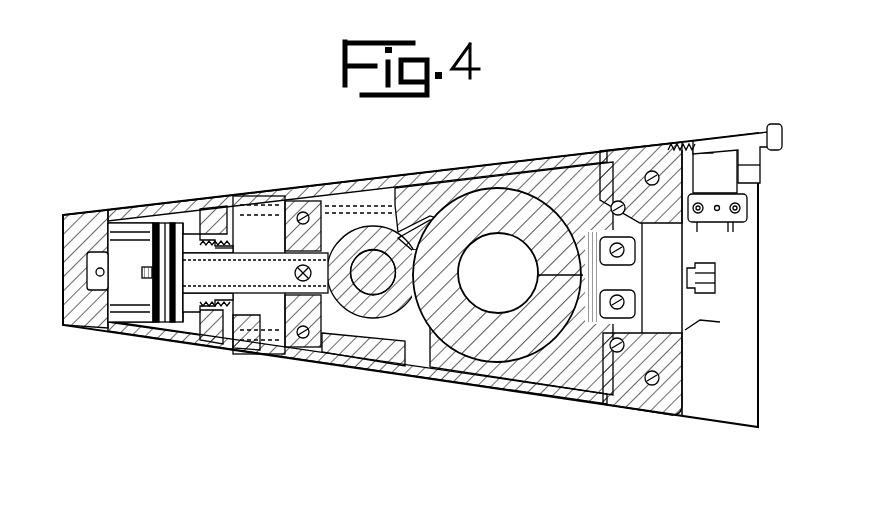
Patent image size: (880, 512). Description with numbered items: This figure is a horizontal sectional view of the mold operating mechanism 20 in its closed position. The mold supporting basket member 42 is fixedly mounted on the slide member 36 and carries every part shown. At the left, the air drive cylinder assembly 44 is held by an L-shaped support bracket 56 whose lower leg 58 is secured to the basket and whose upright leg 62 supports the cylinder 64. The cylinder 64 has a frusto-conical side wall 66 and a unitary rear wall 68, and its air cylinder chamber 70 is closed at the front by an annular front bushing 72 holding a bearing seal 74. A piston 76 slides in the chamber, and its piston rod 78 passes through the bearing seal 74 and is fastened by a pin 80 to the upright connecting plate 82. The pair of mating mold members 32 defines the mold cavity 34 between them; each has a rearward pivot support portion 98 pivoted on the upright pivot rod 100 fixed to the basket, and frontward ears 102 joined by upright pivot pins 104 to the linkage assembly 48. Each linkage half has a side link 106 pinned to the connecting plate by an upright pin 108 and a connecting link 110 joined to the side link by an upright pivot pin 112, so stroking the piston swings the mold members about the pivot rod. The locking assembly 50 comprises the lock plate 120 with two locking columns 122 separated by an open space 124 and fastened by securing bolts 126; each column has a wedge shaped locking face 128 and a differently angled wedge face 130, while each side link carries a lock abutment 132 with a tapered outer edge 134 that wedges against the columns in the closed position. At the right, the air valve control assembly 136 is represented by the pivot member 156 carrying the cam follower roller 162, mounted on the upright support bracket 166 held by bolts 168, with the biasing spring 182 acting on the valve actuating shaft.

The mold operating mechanism 20 is at (525, 120).
The mold members 32 is at (470, 190).
The mold cavity 34 is at (496, 318).
The slide member 36 is at (720, 410).
The mold supporting basket member 42 is at (272, 352).
The air drive cylinder assembly 44 is at (140, 345).
The linkage assembly 48 is at (403, 162).
The locking assembly 50 is at (640, 215).
The support bracket 56 is at (250, 352).
The lower leg 58 is at (262, 205).
The upright leg 62 is at (208, 207).
The cylinder 64 is at (215, 340).
The frusto-conical side wall 66 is at (140, 222).
The rear wall 68 is at (85, 300).
The air cylinder chamber 70 is at (145, 272).
The annular front bushing 72 is at (222, 233).
The bearing seal 74 is at (225, 246).
The piston 76 is at (160, 250).
The piston rod 78 is at (245, 304).
The pin 80 is at (207, 272).
The connecting plate 82 is at (302, 212).
The pivot support portion 98 is at (420, 240).
The upright pivot rod 100 is at (385, 252).
The ears 102 is at (612, 300).
The upright pivot pins 104 is at (634, 278).
The side link 106 is at (530, 175).
The upright pin 108 is at (318, 205).
The connecting link 110 is at (540, 270).
The upright pivot pin 112 is at (590, 170).
The lock plate 120 is at (692, 357).
The locking columns 122 is at (655, 160).
The open space 124 is at (705, 258).
The securing bolts 126 is at (655, 172).
The wedge shaped locking face 128 is at (684, 178).
The wedge face 130 is at (622, 202).
The lock abutment 132 is at (650, 172).
The outer edge 134 is at (685, 330).
The air valve control assembly 136 is at (761, 118).
The pivot member 156 is at (748, 140).
The cam follower roller 162 is at (780, 128).
The upright support bracket 166 is at (745, 212).
The bolts 168 is at (749, 238).
The biasing spring 182 is at (678, 144).